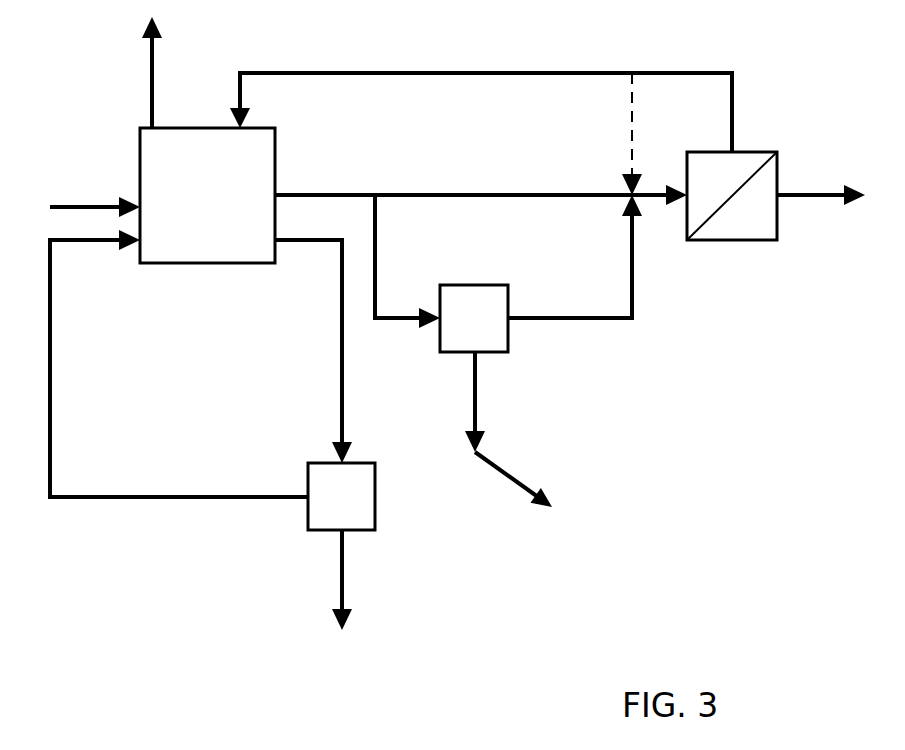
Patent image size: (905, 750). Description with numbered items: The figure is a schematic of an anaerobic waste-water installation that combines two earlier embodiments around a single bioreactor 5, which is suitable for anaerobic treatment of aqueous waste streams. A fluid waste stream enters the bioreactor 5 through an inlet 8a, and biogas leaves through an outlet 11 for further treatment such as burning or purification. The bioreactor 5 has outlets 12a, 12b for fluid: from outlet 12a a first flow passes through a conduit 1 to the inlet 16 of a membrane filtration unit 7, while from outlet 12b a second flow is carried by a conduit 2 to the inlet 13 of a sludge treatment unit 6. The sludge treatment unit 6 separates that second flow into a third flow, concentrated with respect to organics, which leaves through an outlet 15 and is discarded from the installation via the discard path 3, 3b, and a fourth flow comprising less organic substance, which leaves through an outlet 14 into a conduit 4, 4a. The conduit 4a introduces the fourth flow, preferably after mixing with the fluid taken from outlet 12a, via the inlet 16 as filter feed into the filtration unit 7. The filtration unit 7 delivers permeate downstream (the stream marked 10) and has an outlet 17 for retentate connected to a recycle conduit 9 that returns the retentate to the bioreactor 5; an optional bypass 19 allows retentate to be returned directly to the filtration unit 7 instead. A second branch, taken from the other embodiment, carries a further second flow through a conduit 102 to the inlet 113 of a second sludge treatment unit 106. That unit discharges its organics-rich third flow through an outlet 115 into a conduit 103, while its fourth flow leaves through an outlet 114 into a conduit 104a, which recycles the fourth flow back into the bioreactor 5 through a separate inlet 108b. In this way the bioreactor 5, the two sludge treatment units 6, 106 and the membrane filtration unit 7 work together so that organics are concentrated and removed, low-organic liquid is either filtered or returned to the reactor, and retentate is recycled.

The conduit 1 is at (397, 193).
The conduit 2 is at (378, 240).
The third flow discard conduit 3 is at (478, 418).
The third flow discard conduit 3b is at (515, 478).
The conduit for fourth flow 4 is at (575, 316).
The conduit for fourth flow to filtration unit 4a is at (634, 272).
The bioreactor 5 is at (200, 206).
The sludge treatment unit 6 is at (467, 330).
The membrane filtration unit 7 is at (735, 231).
The inlet for fluid waste stream 8a is at (84, 204).
The recycle conduit 9 is at (485, 71).
The product stream 10 is at (822, 193).
The outlet for biogas 11 is at (150, 72).
The outlet for fluid stream 12a is at (277, 194).
The outlet for fluid stream 12b is at (277, 242).
The inlet of sludge treatment unit 13 is at (438, 322).
The outlet for fourth flow 14 is at (510, 322).
The outlet for third flow 15 is at (471, 355).
The inlet of membrane filter unit 16 is at (686, 191).
The outlet for retentate 17 is at (733, 152).
The bypass 19 is at (629, 128).
The conduit for second flow 102 is at (340, 362).
The conduit for third flow 103 is at (345, 597).
The conduit for fourth flow 104a is at (52, 362).
The sludge treatment unit 106 is at (322, 507).
The separate inlet of bioreactor 108b is at (84, 243).
The inlet of sludge treatment unit 113 is at (336, 462).
The outlet for fourth flow 114 is at (306, 500).
The outlet for third flow 115 is at (339, 533).